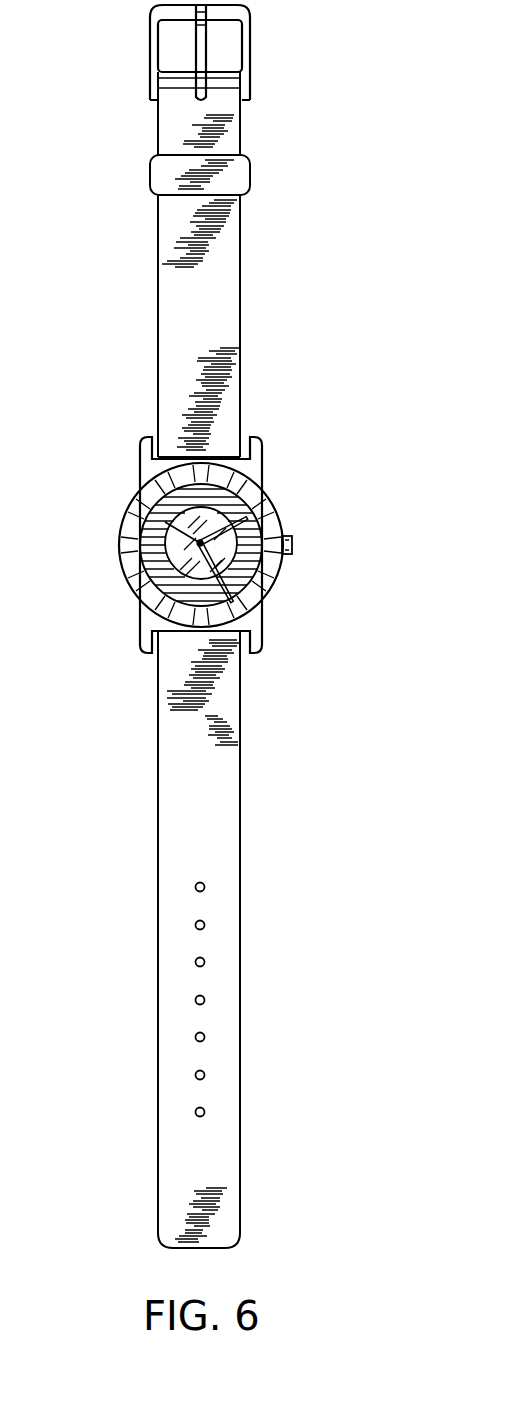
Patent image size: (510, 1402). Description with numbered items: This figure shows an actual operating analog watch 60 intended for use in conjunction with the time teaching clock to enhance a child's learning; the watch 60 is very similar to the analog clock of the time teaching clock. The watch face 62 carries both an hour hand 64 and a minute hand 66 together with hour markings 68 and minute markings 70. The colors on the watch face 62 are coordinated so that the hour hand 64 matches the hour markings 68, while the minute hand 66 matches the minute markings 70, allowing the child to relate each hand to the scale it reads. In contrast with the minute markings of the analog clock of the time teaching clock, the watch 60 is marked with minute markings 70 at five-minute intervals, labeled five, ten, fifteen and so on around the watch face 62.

The watch 60 is at (340, 416).
The watch face 62 is at (228, 555).
The hour hand 64 is at (160, 520).
The minute hand 66 is at (254, 503).
The hour markings 68 is at (278, 528).
The minute markings 70 is at (128, 558).